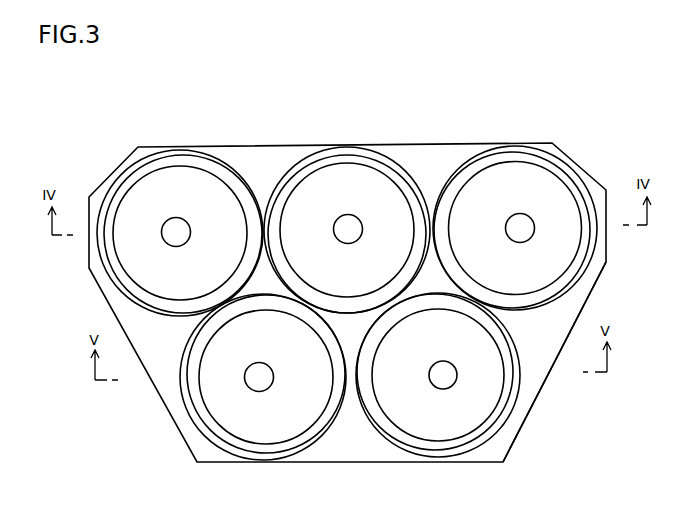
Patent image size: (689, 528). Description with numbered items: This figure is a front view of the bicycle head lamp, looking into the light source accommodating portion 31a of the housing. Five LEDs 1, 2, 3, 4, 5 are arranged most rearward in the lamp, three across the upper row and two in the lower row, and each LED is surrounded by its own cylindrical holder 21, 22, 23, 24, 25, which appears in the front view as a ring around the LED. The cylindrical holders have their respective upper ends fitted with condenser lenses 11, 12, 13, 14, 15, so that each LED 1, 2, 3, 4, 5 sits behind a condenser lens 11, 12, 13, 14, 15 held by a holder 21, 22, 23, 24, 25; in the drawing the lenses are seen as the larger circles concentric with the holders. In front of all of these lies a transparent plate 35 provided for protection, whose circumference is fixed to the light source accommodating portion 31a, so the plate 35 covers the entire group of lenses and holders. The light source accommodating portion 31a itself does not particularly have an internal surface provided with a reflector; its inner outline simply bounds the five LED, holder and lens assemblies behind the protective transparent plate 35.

The LED 1 is at (178, 230).
The LED 2 is at (350, 227).
The LED 3 is at (522, 225).
The LED 4 is at (268, 381).
The LED 5 is at (450, 378).
The condenser lens 11 is at (137, 197).
The condenser lens 12 is at (307, 192).
The condenser lens 13 is at (480, 190).
The condenser lens 14 is at (219, 412).
The condenser lens 15 is at (395, 408).
The cylindrical holder 21 is at (170, 158).
The cylindrical holder 22 is at (340, 157).
The cylindrical holder 23 is at (513, 155).
The cylindrical holder 24 is at (263, 450).
The cylindrical holder 25 is at (442, 447).
The light source accommodating portion 31a is at (528, 415).
The transparent plate 35 is at (568, 302).